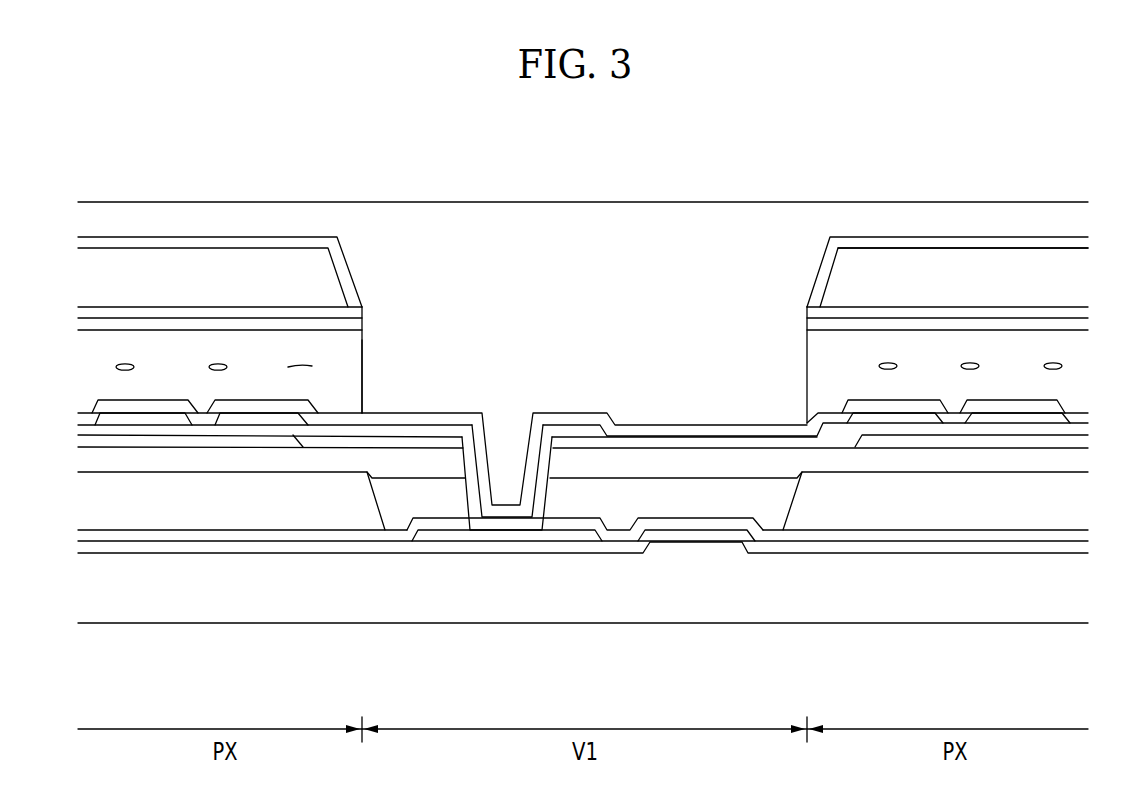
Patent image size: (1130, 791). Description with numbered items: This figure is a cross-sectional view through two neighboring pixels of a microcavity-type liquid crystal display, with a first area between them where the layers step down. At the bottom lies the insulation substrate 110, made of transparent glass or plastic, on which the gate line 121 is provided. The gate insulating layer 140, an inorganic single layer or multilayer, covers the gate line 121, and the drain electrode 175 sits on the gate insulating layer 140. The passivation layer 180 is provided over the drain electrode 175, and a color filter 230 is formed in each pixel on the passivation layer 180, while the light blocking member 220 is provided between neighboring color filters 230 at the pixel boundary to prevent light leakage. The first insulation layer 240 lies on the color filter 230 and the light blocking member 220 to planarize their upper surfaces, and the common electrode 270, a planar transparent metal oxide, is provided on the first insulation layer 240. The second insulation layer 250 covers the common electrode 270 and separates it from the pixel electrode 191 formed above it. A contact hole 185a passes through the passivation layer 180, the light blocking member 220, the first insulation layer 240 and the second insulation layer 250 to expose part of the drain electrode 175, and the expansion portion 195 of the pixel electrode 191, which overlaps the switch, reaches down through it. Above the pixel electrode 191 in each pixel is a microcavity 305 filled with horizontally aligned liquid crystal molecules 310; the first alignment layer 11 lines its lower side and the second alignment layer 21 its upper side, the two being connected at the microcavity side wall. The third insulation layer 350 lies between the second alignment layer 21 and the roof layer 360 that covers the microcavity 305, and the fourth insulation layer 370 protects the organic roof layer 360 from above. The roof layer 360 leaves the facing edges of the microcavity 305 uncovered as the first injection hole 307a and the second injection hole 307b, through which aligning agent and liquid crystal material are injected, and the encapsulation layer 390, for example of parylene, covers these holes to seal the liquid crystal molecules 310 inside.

The first alignment layer 11 is at (280, 407).
The second alignment layer 21 is at (124, 327).
The insulation substrate 110 is at (668, 600).
The gate line 121 is at (715, 547).
The gate insulating layer 140 is at (609, 546).
The drain electrode 175 is at (463, 535).
The passivation layer 180 is at (108, 535).
The contact hole 185a is at (547, 487).
The pixel electrode 191 is at (333, 430).
The expansion portion 195 is at (571, 430).
The light blocking member 220 is at (398, 508).
The color filter 230 is at (187, 513).
The first insulation layer 240 is at (768, 458).
The second insulation layer 250 is at (227, 430).
The common electrode 270 is at (133, 442).
The microcavity 305 is at (297, 362).
The first injection hole 307a is at (803, 375).
The second injection hole 307b is at (366, 375).
The liquid crystal molecules 310 is at (209, 367).
The third insulation layer 350 is at (902, 313).
The roof layer 360 is at (196, 275).
The fourth insulation layer 370 is at (1062, 243).
The encapsulation layer 390 is at (612, 232).